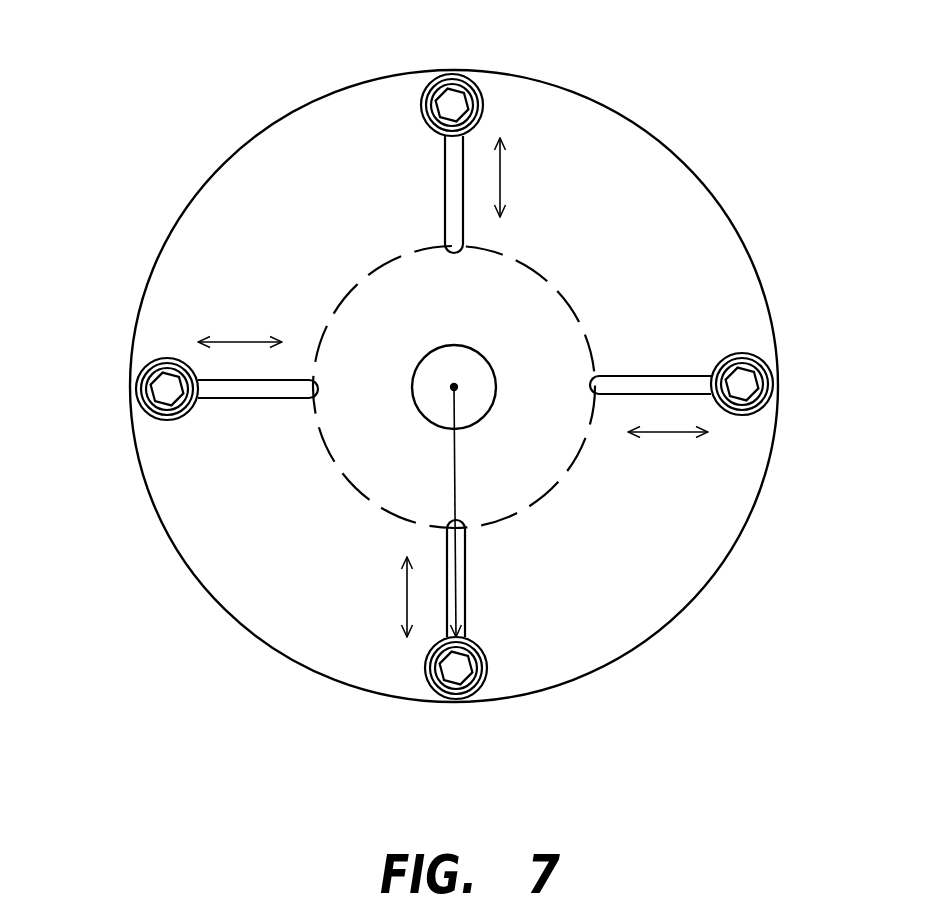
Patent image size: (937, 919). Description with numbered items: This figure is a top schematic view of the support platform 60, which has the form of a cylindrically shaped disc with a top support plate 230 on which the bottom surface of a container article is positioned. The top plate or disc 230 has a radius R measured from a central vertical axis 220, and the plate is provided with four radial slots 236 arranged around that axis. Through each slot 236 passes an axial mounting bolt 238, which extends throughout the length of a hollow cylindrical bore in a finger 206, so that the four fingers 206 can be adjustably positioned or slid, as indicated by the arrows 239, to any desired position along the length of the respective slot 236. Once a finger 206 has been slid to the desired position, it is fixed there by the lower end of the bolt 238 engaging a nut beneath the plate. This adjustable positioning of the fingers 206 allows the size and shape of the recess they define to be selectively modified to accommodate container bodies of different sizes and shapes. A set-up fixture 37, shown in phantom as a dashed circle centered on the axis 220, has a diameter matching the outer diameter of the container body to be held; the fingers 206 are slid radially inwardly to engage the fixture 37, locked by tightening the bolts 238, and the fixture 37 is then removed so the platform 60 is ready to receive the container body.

The support platform 60 is at (724, 71).
The top support plate 230 is at (706, 175).
The set-up fixture 37 is at (563, 484).
The central vertical axis 220 is at (456, 385).
The radius R is at (455, 490).
The radial slot 236 is at (464, 218).
The axial mounting bolt 238 is at (437, 130).
The finger 206 is at (475, 85).
The arrow 239 is at (502, 183).